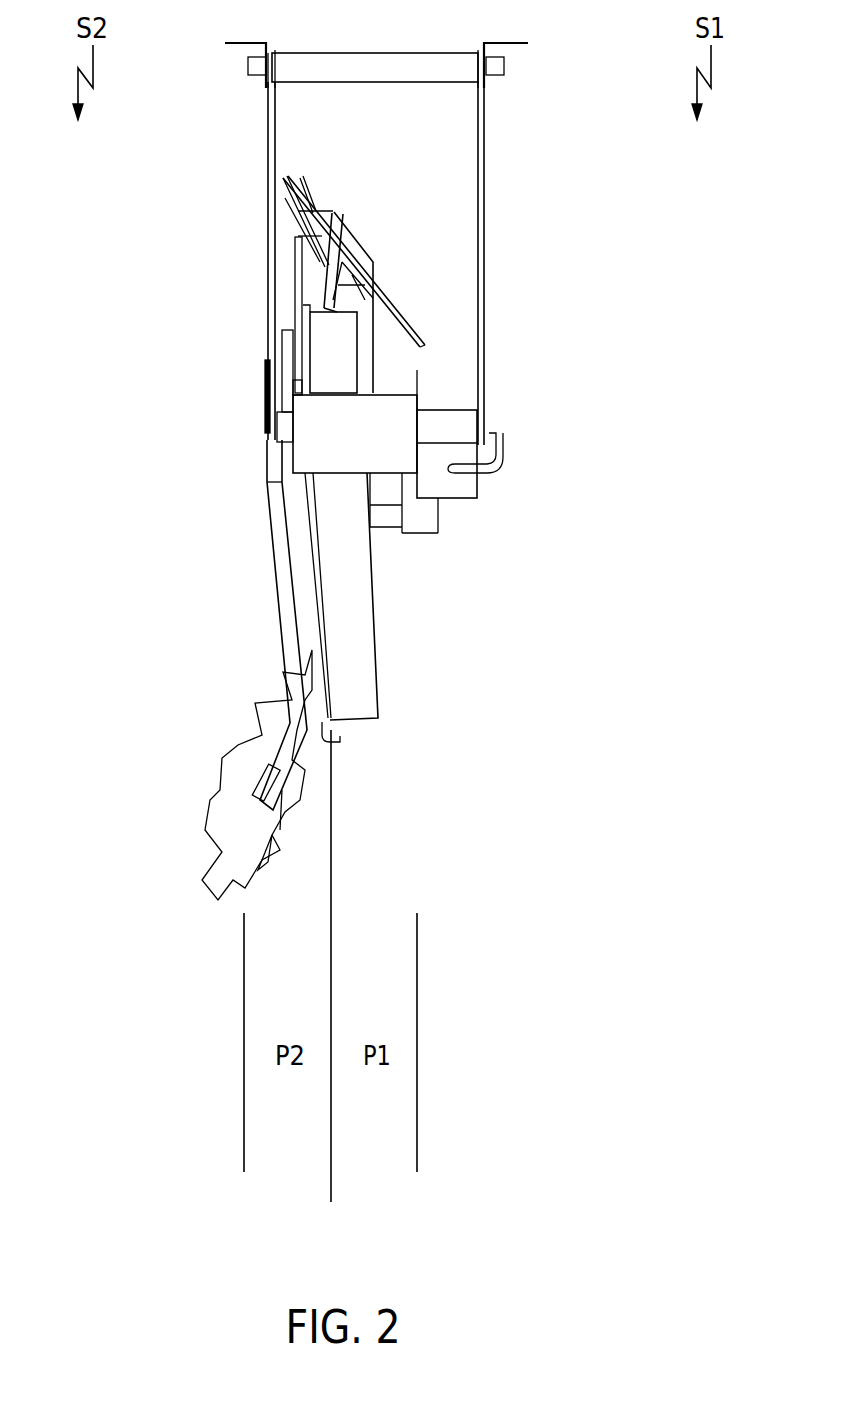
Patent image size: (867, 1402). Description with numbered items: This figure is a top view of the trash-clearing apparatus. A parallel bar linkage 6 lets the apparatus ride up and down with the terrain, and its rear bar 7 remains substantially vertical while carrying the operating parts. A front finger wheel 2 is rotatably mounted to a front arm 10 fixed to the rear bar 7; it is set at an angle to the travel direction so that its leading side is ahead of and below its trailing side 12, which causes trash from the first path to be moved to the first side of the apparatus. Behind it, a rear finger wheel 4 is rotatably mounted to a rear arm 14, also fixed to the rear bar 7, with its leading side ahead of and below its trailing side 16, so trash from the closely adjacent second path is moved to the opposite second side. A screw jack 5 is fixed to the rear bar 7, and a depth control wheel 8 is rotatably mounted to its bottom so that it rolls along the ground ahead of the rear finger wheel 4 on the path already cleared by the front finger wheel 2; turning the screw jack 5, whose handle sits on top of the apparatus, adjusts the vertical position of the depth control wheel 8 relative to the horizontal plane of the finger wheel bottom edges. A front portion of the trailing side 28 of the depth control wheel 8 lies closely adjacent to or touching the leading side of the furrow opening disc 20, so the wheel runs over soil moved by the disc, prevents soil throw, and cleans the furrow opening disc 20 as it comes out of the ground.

The front finger wheel 2 is at (313, 186).
The rear finger wheel 4 is at (217, 803).
The screw jack 5 is at (478, 490).
The parallel bar linkage 6 is at (485, 125).
The rear bar 7 is at (420, 420).
The depth control wheel 8 is at (375, 598).
The front arm 10 is at (408, 322).
The trailing side 12 is at (298, 236).
The rear arm 14 is at (274, 578).
The trailing side 16 is at (276, 838).
The furrow opening disc 20 is at (296, 288).
The trailing side 28 is at (340, 746).